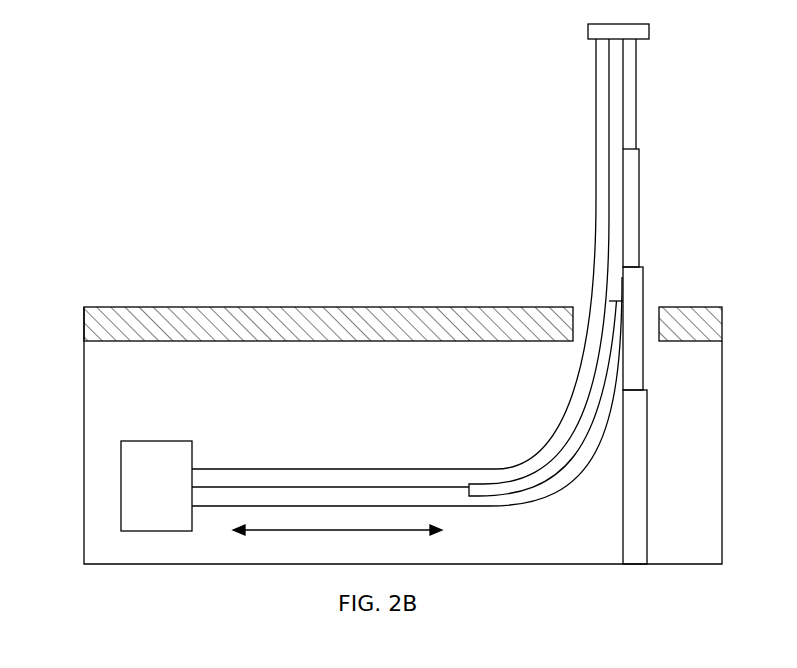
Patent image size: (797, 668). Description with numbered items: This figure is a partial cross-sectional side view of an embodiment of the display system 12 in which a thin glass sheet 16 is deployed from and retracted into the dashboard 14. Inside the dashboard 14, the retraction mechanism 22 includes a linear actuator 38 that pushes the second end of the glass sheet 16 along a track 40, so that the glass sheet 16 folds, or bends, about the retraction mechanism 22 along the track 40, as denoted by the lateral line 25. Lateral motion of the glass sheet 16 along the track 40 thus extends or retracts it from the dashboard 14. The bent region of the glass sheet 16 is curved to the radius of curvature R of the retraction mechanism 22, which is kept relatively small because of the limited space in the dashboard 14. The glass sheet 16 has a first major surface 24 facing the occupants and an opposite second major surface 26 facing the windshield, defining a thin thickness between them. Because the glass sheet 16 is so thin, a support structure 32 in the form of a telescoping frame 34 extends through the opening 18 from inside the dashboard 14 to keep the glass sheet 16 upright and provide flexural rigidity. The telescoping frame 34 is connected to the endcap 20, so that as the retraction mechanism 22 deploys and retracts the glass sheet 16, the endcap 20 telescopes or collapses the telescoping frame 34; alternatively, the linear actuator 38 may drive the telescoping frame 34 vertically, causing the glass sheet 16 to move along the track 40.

The display system 12 is at (308, 104).
The dashboard 14 is at (150, 306).
The glass sheet 16 is at (603, 86).
The opening 18 is at (583, 300).
The endcap 20 is at (645, 32).
The retraction mechanism 22 is at (125, 440).
The first major surface 24 is at (595, 193).
The lateral line 25 is at (267, 532).
The second major surface 26 is at (612, 258).
The support structure 32 is at (658, 210).
The telescoping frame 34 is at (632, 163).
The linear actuator 38 is at (140, 475).
The track 40 is at (330, 470).
The radius of curvature R is at (541, 444).